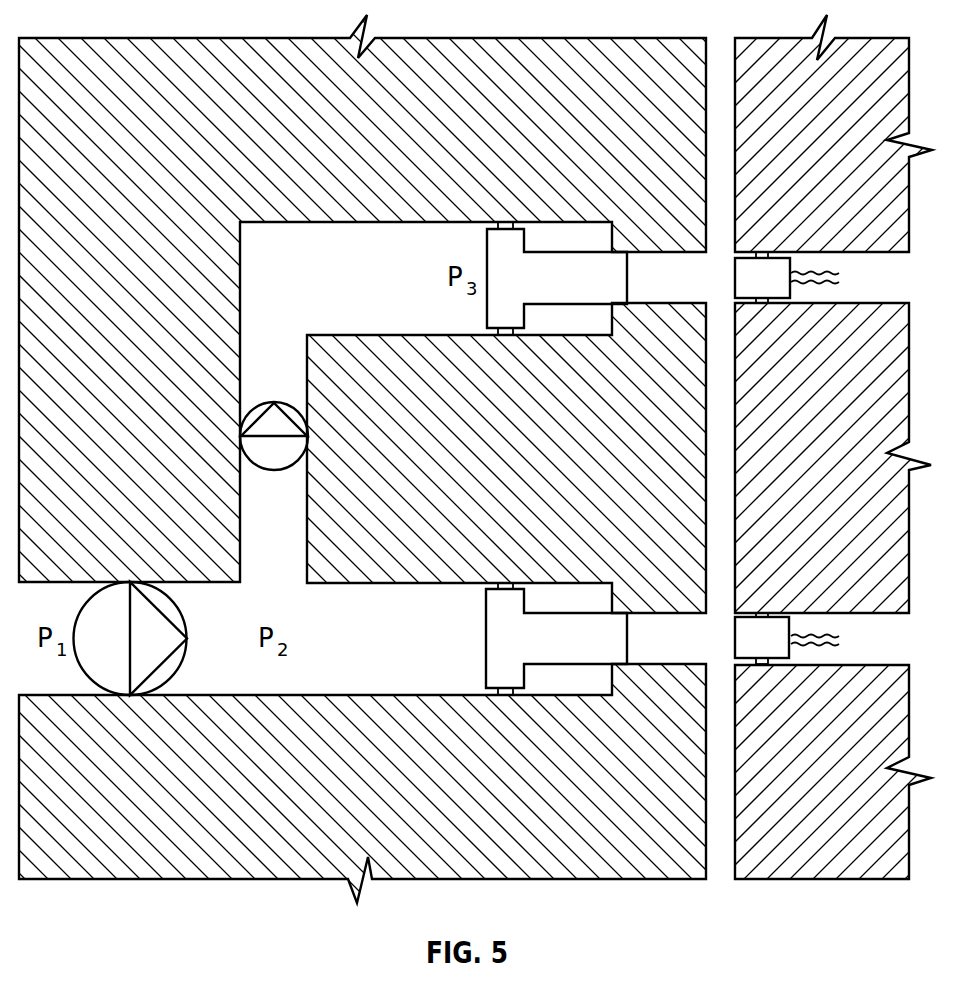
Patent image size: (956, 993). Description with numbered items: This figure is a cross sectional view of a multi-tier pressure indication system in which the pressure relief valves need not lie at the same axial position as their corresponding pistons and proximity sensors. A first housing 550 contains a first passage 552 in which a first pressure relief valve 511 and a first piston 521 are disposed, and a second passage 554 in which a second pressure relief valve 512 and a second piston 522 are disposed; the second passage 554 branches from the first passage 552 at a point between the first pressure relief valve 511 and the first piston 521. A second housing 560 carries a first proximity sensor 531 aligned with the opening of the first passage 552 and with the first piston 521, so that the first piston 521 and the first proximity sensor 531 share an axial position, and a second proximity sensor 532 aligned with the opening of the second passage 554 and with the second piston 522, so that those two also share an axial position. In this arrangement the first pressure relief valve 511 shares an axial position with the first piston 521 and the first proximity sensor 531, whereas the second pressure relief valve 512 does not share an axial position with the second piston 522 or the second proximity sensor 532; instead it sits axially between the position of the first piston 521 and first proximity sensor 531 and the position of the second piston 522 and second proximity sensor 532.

The first housing 550 is at (172, 167).
The first passage 552 is at (431, 590).
The second passage 554 is at (295, 232).
The second housing 560 is at (845, 162).
The first pressure relief valve 511 is at (121, 652).
The second pressure relief valve 512 is at (274, 470).
The first piston 521 is at (578, 653).
The second piston 522 is at (578, 292).
The first proximity sensor 531 is at (783, 653).
The second proximity sensor 532 is at (783, 292).